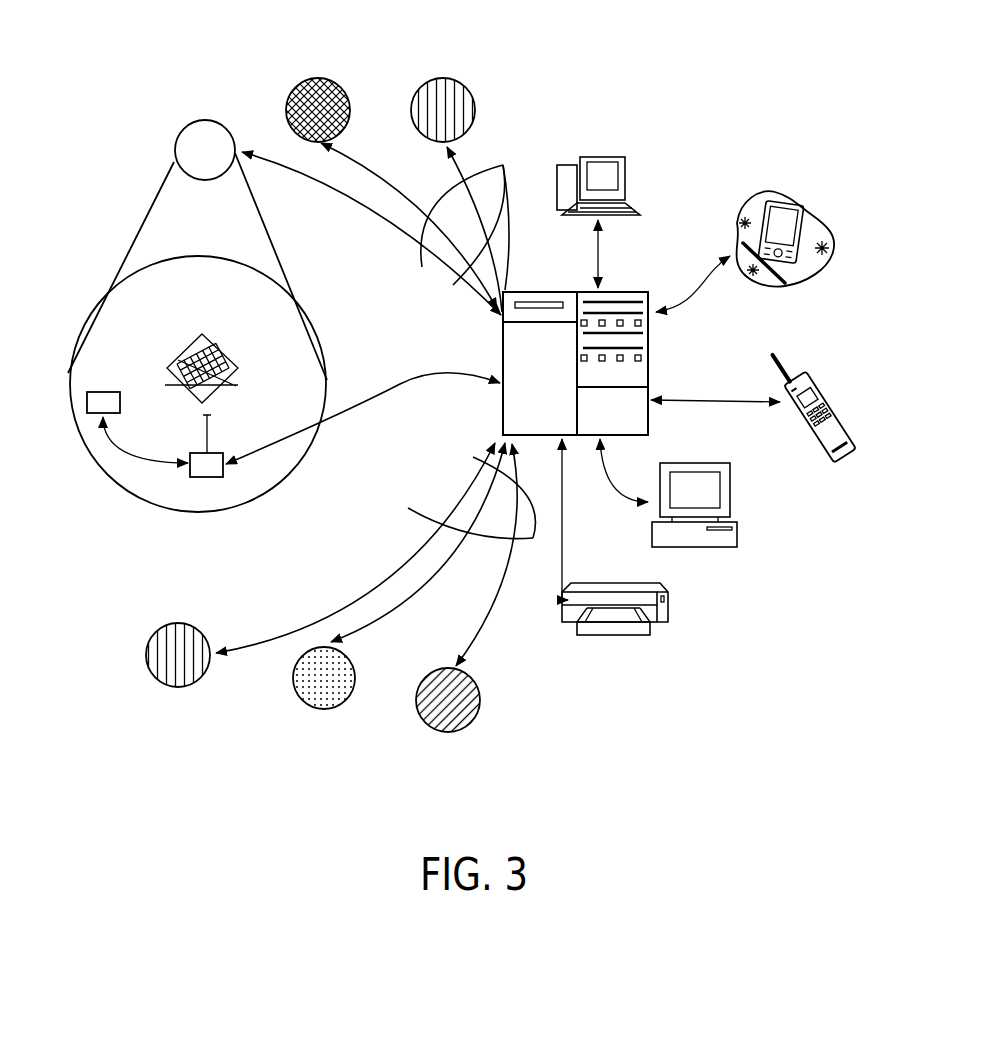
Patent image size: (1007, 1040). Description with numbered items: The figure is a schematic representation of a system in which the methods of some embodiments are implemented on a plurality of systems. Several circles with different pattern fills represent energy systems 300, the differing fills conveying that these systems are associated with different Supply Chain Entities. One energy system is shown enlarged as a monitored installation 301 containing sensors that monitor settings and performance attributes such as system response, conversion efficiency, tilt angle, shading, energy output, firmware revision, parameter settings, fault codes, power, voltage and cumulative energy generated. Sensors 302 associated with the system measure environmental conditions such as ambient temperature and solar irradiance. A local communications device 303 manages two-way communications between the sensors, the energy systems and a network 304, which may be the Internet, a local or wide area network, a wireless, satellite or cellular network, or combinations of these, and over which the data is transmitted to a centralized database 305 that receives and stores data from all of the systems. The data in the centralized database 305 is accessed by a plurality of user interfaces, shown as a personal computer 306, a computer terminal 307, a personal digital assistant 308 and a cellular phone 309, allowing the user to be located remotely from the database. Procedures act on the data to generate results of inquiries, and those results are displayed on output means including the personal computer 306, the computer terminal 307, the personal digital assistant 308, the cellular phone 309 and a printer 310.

The energy systems 300 is at (408, 89).
The monitored environment 301 is at (167, 326).
The sensors associated with the energy system 302 is at (87, 418).
The local communications device 303 is at (207, 481).
The network 304 is at (430, 268).
The centralized database 305 is at (500, 335).
The personal computer 306 is at (598, 152).
The computer terminal 307 is at (715, 556).
The personal digital assistant 308 is at (731, 200).
The cellular phone 309 is at (778, 379).
The printer 310 is at (614, 642).